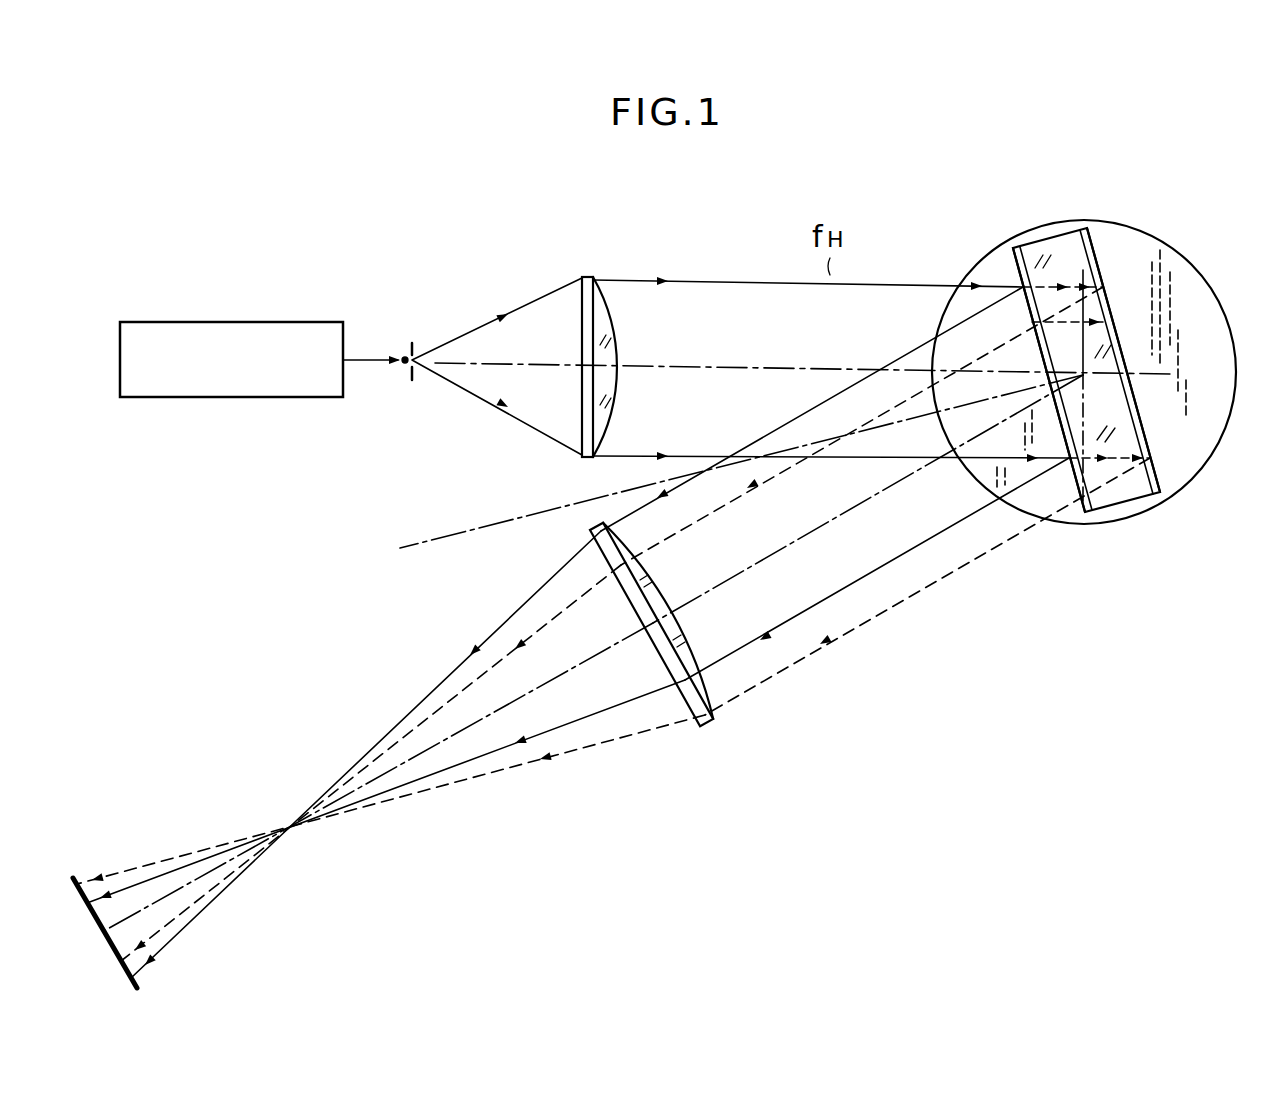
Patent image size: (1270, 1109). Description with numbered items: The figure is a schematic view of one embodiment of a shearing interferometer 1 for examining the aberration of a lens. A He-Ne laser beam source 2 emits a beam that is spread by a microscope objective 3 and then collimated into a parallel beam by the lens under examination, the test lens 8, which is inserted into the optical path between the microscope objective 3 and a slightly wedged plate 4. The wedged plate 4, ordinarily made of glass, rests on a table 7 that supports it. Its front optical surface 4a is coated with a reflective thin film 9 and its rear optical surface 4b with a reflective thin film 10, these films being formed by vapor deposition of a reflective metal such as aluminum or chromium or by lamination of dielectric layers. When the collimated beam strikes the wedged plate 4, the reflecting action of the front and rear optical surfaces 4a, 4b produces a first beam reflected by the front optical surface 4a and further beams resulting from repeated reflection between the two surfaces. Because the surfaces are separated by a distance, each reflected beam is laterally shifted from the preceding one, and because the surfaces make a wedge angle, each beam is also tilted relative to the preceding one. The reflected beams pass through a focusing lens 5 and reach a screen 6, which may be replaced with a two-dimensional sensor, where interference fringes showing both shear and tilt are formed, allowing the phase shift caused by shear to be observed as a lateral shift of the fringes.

The shearing interferometer 1 is at (713, 250).
The laser beam source 2 is at (223, 328).
The microscope objective 3 is at (405, 357).
The wedged plate 4 is at (1077, 380).
The front optical surface 4a is at (1078, 512).
The rear optical surface 4b is at (1168, 482).
The focusing lens 5 is at (717, 719).
The screen 6 is at (76, 878).
The table 7 is at (1213, 462).
The test lens 8 is at (590, 277).
The reflective thin film 9 is at (1015, 270).
The reflective thin film 10 is at (1096, 265).